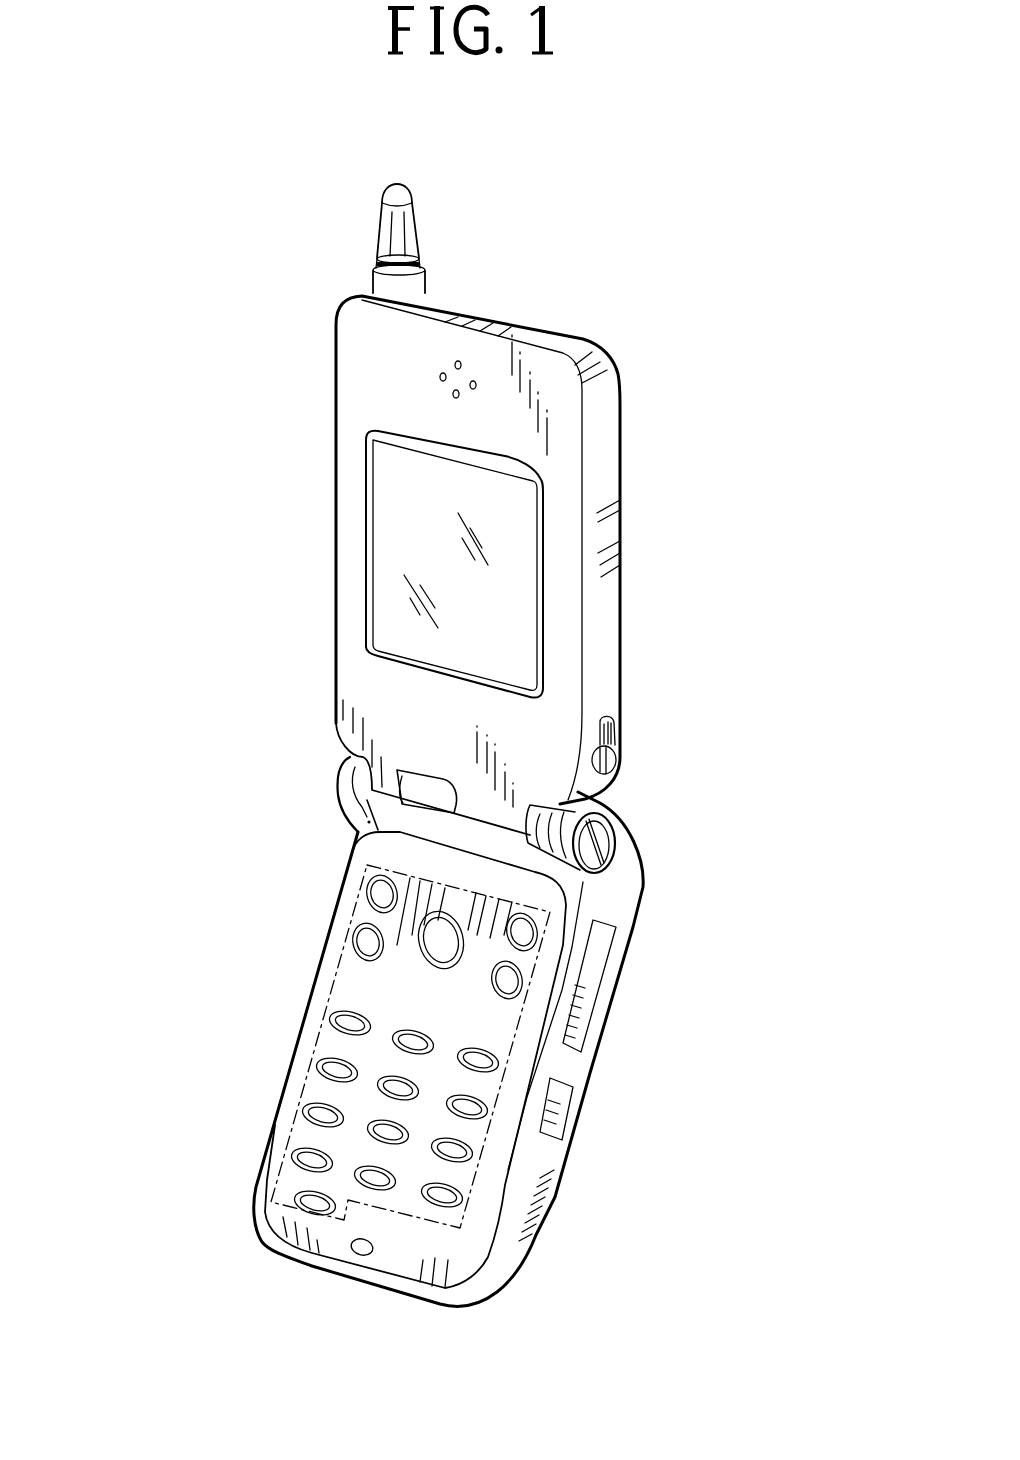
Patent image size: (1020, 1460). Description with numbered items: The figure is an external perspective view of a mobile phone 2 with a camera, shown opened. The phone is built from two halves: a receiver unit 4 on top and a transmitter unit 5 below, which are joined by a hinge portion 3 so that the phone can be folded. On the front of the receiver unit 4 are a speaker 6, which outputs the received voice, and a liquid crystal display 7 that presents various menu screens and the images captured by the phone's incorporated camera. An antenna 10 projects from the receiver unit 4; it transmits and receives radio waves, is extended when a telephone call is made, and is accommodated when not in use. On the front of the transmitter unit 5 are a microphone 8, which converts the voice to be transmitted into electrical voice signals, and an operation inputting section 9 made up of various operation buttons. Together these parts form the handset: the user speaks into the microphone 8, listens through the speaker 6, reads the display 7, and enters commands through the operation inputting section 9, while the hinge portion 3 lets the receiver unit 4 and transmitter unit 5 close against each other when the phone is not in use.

The mobile phone 2 is at (212, 180).
The hinge portion 3 is at (597, 840).
The receiver unit 4 is at (310, 454).
The transmitter unit 5 is at (254, 1106).
The speaker 6 is at (463, 381).
The liquid crystal display (LCD) 7 is at (492, 607).
The microphone 8 is at (351, 1249).
The operation inputting section 9 is at (332, 987).
The antenna 10 is at (397, 213).